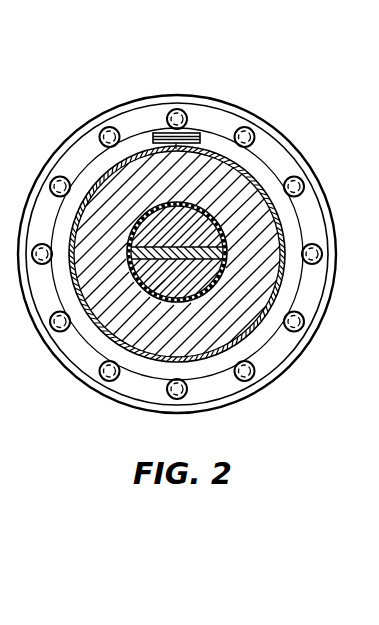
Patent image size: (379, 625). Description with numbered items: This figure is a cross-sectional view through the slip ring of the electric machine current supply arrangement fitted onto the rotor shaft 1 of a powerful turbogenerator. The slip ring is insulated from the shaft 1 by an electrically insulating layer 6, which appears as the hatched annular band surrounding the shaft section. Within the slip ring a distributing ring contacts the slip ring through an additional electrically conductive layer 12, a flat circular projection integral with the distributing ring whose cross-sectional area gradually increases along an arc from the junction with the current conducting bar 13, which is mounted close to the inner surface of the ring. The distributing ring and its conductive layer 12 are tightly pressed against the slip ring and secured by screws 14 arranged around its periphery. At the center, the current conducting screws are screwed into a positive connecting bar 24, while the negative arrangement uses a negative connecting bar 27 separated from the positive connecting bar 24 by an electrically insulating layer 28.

The shaft 1 is at (268, 284).
The electrically insulating layer 6 is at (282, 222).
The additional electrically conductive layer 12 is at (256, 158).
The current conducting bar 13 is at (174, 147).
The screws 14 is at (304, 187).
The positive connecting bar 24 is at (153, 230).
The negative connecting bar 27 is at (150, 294).
The electrically insulating layer 28 is at (222, 248).